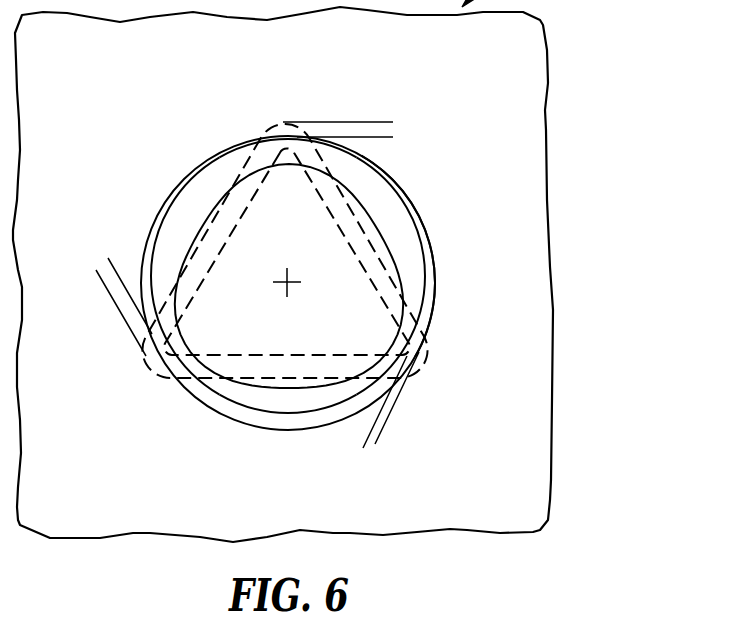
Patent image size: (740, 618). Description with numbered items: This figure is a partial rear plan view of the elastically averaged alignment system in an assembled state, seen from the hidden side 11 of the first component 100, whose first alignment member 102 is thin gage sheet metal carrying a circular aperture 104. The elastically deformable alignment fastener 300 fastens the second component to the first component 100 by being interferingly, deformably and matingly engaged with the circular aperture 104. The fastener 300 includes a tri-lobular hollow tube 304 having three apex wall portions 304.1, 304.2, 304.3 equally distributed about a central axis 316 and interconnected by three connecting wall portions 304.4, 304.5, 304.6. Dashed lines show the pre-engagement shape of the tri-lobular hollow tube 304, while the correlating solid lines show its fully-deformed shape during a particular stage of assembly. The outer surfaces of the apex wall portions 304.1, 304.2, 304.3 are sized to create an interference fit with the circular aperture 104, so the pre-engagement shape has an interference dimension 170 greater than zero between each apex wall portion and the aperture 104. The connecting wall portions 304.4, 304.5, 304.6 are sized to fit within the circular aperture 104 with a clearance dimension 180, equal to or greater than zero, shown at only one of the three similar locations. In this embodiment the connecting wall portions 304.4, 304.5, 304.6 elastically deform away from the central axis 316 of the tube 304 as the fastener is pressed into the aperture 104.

The first component 100 is at (540, 115).
The first alignment member 102 is at (503, 59).
The non-visible side of the first alignment member 11 is at (516, 496).
The circular aperture 104 is at (422, 216).
The clearance dimension 180 is at (155, 210).
The interference dimension 170 is at (390, 145).
The elastically deformable alignment fastener 300 is at (410, 296).
The tri-lobular hollow tube 304 is at (233, 405).
The apex wall portion 304.1 is at (147, 358).
The apex wall portion 304.2 is at (283, 122).
The apex wall portion 304.3 is at (430, 358).
The connecting wall portion 304.4 is at (185, 225).
The connecting wall portion 304.5 is at (394, 198).
The connecting wall portion 304.6 is at (303, 418).
The central axis 316 is at (288, 270).